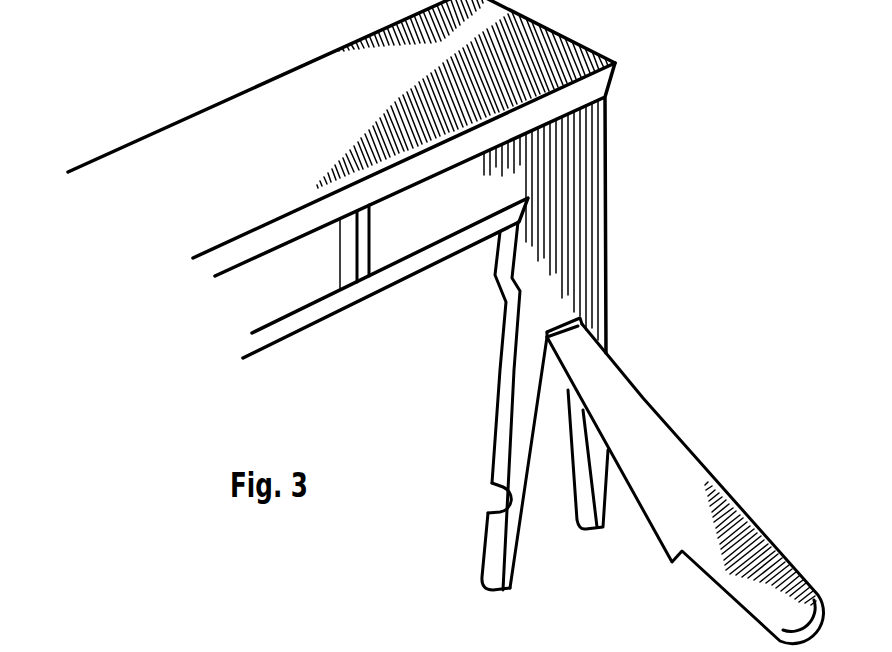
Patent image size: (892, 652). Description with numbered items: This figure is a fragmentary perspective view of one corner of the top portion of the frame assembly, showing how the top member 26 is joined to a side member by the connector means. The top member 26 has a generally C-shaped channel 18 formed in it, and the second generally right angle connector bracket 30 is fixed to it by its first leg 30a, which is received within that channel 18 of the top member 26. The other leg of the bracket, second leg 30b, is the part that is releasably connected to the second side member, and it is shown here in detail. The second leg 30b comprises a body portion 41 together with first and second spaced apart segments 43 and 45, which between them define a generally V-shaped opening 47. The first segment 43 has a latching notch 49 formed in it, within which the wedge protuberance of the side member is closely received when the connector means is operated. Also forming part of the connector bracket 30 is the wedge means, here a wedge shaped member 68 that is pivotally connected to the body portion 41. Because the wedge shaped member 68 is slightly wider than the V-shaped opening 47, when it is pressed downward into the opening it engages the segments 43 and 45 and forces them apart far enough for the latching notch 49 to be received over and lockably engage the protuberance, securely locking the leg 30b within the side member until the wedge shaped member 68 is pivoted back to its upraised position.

The top member 26 is at (272, 100).
The second connector bracket 30 is at (605, 154).
The first leg of connector bracket 30a is at (443, 224).
The second leg of connector bracket 30b is at (593, 253).
The channel 18 is at (287, 292).
The body portion 41 is at (557, 305).
The first segment 43 is at (523, 382).
The second segment 45 is at (603, 515).
The V-shaped opening 47 is at (557, 435).
The latching notch 49 is at (492, 503).
The wedge shaped member 68 is at (678, 467).